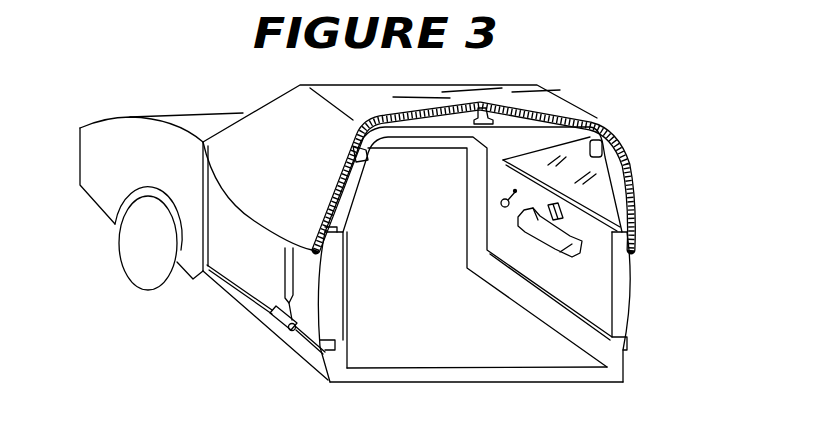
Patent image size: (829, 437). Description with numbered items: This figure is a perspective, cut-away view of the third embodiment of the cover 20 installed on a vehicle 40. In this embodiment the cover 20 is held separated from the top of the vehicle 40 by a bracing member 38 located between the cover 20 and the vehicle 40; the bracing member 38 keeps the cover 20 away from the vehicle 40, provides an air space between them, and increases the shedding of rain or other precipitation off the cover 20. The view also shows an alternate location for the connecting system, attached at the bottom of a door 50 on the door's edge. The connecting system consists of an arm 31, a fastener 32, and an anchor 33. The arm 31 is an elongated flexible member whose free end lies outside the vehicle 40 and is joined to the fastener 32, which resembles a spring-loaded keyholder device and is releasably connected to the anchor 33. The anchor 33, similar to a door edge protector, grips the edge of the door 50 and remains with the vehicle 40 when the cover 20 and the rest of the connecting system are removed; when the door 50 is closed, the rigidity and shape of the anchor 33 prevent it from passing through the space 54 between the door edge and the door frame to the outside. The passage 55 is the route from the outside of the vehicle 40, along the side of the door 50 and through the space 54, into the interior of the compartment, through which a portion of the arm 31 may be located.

The cover 20 is at (282, 132).
The arm 31 is at (288, 270).
The fastener 32 is at (293, 316).
The anchor 33 is at (282, 320).
The bracing member 38 is at (465, 107).
The vehicle 40 is at (143, 163).
The door 50 is at (253, 260).
The space 54 is at (240, 297).
The passage 55 is at (205, 200).